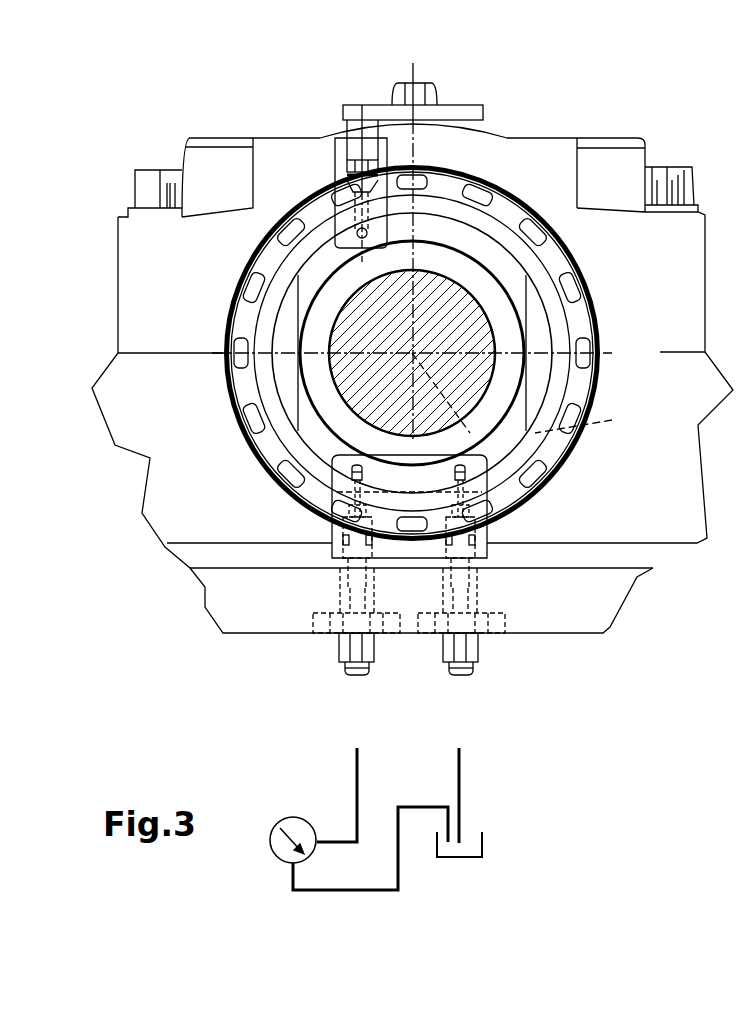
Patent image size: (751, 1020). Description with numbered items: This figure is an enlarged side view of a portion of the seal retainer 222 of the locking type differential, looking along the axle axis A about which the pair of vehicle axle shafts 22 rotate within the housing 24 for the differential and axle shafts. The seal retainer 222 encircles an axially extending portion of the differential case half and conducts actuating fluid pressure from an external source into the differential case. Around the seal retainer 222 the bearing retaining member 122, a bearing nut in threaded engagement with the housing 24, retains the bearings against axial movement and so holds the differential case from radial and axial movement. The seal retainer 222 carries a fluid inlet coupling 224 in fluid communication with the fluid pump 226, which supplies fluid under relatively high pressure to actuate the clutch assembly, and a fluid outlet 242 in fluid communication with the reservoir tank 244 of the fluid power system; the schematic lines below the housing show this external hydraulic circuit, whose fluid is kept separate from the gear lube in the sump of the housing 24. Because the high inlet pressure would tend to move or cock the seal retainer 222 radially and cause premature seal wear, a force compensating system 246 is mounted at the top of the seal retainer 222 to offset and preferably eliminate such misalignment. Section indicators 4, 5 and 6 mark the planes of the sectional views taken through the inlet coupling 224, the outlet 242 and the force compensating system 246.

The axle shaft 22 is at (255, 243).
The housing 24 is at (537, 157).
The bearing retaining member 122 is at (553, 443).
The seal retainer 222 is at (468, 430).
The fluid inlet coupling 224 is at (340, 647).
The fluid outlet 242 is at (483, 647).
The fluid pump 226 is at (268, 847).
The reservoir tank 244 is at (497, 843).
The force compensating system 246 is at (338, 165).
The axle axis A is at (520, 393).
The section line 4 is at (358, 430).
The section line 5 is at (460, 463).
The section line 6 is at (362, 92).